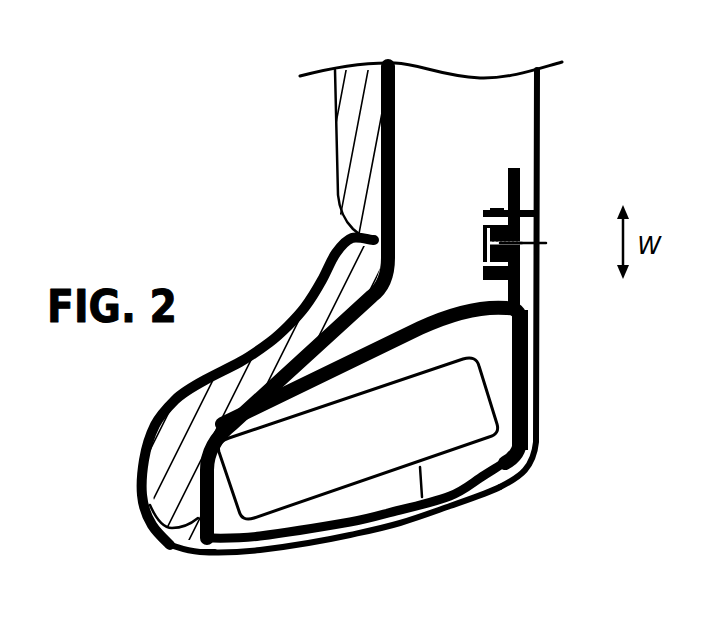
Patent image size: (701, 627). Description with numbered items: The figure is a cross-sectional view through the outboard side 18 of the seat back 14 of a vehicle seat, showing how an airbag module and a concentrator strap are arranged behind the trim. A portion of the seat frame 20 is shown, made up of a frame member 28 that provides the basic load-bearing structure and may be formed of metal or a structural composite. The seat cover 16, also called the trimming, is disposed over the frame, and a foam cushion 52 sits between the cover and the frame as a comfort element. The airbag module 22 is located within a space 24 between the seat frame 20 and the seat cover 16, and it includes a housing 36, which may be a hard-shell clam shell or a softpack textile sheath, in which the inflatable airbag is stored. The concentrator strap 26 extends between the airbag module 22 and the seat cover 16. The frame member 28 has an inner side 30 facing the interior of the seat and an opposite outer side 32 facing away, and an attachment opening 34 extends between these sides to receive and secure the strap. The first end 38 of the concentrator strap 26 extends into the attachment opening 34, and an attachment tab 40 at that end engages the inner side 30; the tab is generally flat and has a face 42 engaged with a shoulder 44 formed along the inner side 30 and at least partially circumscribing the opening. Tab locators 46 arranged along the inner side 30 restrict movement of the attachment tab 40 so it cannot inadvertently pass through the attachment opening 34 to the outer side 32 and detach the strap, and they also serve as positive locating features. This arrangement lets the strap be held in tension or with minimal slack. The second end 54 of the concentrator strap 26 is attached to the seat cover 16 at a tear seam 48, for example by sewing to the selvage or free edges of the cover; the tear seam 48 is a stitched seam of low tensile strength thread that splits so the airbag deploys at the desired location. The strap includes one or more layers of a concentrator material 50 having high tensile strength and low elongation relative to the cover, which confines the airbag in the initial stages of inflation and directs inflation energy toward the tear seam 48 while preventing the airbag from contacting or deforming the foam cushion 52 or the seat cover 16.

The seat back 14 is at (246, 176).
The seat cover 16 is at (257, 333).
The outboard side 18 is at (88, 452).
The seat frame 20 is at (393, 82).
The airbag module 22 is at (374, 418).
The space 24 is at (497, 340).
The concentrator strap 26 is at (377, 505).
The frame member 28 is at (530, 418).
The inner side 30 is at (507, 180).
The outer side 32 is at (536, 212).
The attachment opening 34 is at (546, 243).
The housing 36 is at (422, 497).
The first end 38 is at (546, 243).
The attachment tab 40 is at (485, 230).
The face 42 is at (487, 244).
The shoulder 44 is at (484, 262).
The tab locators 46 is at (493, 208).
The tear seam 48 is at (162, 533).
The concentrator material 50 is at (397, 504).
The foam cushion 52 is at (163, 427).
The second end 54 is at (203, 549).